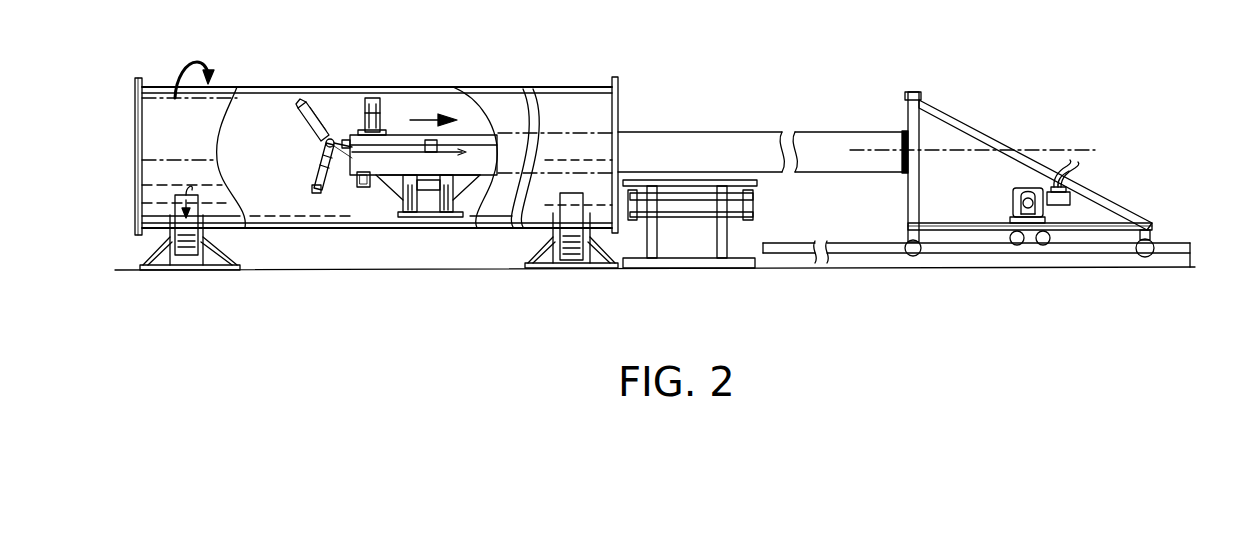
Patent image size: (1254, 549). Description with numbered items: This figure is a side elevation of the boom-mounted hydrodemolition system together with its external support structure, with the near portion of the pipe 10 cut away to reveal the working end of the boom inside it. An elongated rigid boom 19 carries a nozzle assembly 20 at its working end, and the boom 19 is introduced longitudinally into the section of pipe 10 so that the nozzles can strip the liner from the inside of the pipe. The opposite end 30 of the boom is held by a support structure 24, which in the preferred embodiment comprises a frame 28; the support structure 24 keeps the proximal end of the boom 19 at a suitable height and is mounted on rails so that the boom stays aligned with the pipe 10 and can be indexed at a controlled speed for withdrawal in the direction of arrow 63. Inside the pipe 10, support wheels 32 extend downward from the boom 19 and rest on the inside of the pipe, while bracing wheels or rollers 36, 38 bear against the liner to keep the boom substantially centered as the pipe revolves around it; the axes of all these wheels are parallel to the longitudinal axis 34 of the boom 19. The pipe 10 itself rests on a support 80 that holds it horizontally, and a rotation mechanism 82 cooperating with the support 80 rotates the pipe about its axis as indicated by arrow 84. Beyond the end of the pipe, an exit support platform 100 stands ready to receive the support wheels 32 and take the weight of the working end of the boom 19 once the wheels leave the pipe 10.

The pipe 10 is at (212, 102).
The boom 19 is at (686, 145).
The nozzle assembly 20 is at (331, 140).
The support structure 24 is at (1000, 124).
The frame 28 is at (907, 207).
The end of the boom 30 is at (893, 140).
The support wheels 32 is at (443, 213).
The longitudinal axis 34 is at (1077, 150).
The bracing wheel 36 is at (363, 188).
The bracing wheel 38 is at (368, 99).
The arrow 63 is at (423, 121).
The support 80 is at (157, 254).
The rotation mechanism 82 is at (189, 237).
The arrow 84 is at (186, 60).
The exit support platform 100 is at (697, 222).